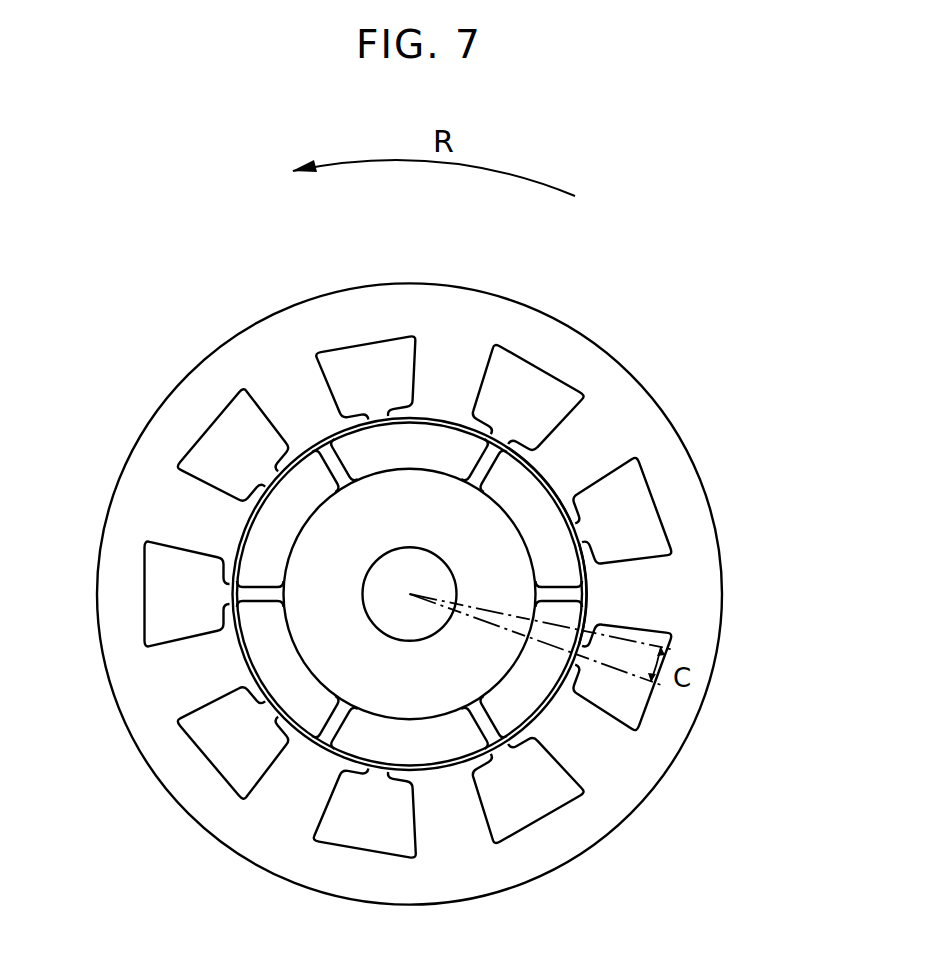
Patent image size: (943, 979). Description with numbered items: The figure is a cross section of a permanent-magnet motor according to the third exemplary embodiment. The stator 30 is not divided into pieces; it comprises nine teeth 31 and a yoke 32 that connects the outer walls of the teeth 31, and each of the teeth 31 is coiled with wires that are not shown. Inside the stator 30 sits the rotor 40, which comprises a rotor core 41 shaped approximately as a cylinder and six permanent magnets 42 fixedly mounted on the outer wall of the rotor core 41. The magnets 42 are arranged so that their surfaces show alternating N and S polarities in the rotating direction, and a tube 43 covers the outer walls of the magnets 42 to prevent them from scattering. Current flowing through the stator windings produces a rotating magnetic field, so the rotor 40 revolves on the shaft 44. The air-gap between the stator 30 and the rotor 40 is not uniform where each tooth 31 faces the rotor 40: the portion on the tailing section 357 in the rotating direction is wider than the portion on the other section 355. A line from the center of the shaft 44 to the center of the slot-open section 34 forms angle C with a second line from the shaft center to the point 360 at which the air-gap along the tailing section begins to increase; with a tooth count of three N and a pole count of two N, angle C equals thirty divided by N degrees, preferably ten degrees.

The stator 30 is at (485, 575).
The teeth 31 is at (568, 437).
The yoke 32 is at (593, 373).
The slot-open section 34 is at (586, 535).
The section 355 is at (594, 598).
The tailing section 357 is at (607, 633).
The point 360 is at (588, 633).
The rotor 40 is at (342, 656).
The rotor core 41 is at (345, 668).
The permanent magnets 42 is at (393, 745).
The tube 43 is at (497, 745).
The shaft 44 is at (381, 587).